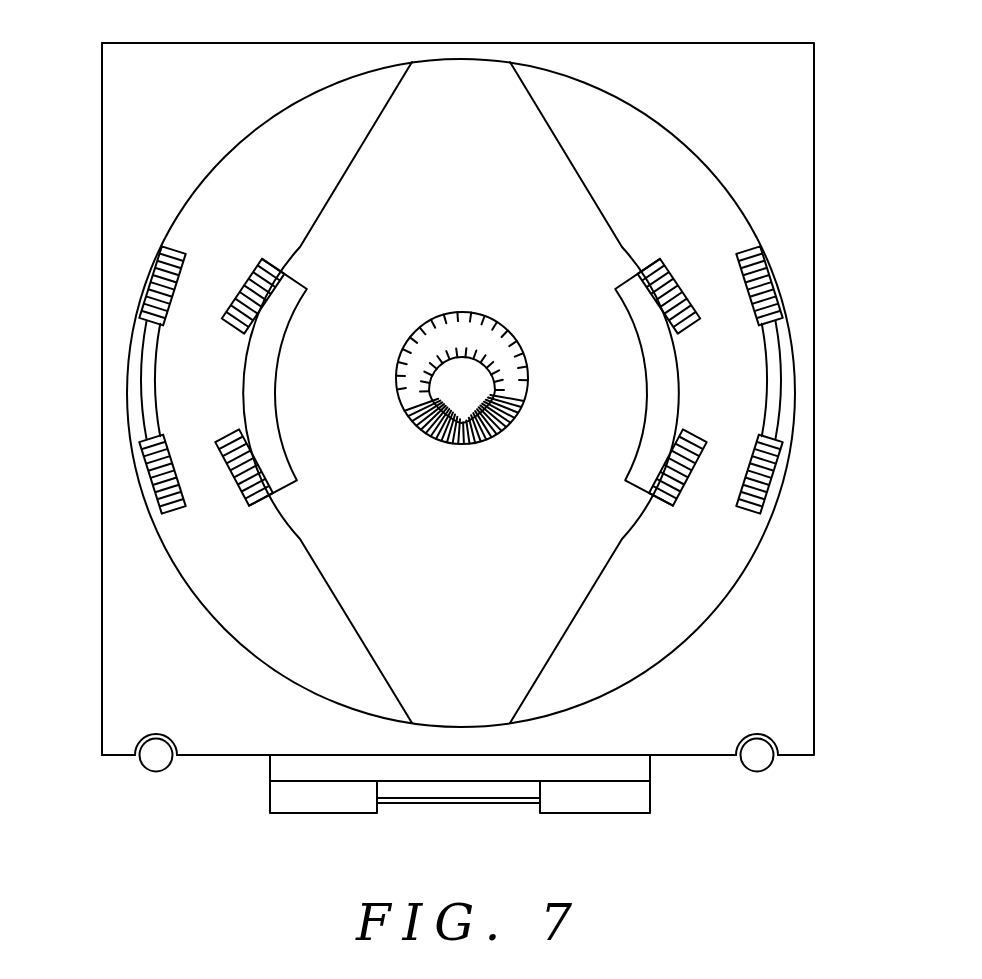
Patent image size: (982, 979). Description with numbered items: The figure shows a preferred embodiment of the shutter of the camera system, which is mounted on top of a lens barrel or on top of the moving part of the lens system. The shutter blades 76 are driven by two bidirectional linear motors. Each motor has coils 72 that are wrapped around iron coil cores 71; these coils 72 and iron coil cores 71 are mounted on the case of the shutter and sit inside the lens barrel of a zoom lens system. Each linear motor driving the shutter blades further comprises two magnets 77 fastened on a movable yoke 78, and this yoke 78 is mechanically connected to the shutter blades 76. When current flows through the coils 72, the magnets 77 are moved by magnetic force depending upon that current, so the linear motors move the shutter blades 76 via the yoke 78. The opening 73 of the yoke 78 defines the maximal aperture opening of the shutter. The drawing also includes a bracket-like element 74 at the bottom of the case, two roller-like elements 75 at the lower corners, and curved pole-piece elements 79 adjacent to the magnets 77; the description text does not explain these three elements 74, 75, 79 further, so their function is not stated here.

The iron coil core 71 is at (146, 394).
The coil 72 is at (160, 272).
The opening of the yoke 73 is at (448, 312).
The mounting bracket 74 is at (362, 772).
The wheel / roller 75 is at (157, 760).
The shutter blade 76 is at (528, 378).
The magnet 77 is at (258, 266).
The movable yoke 78 is at (488, 100).
The pole piece 79 is at (258, 378).